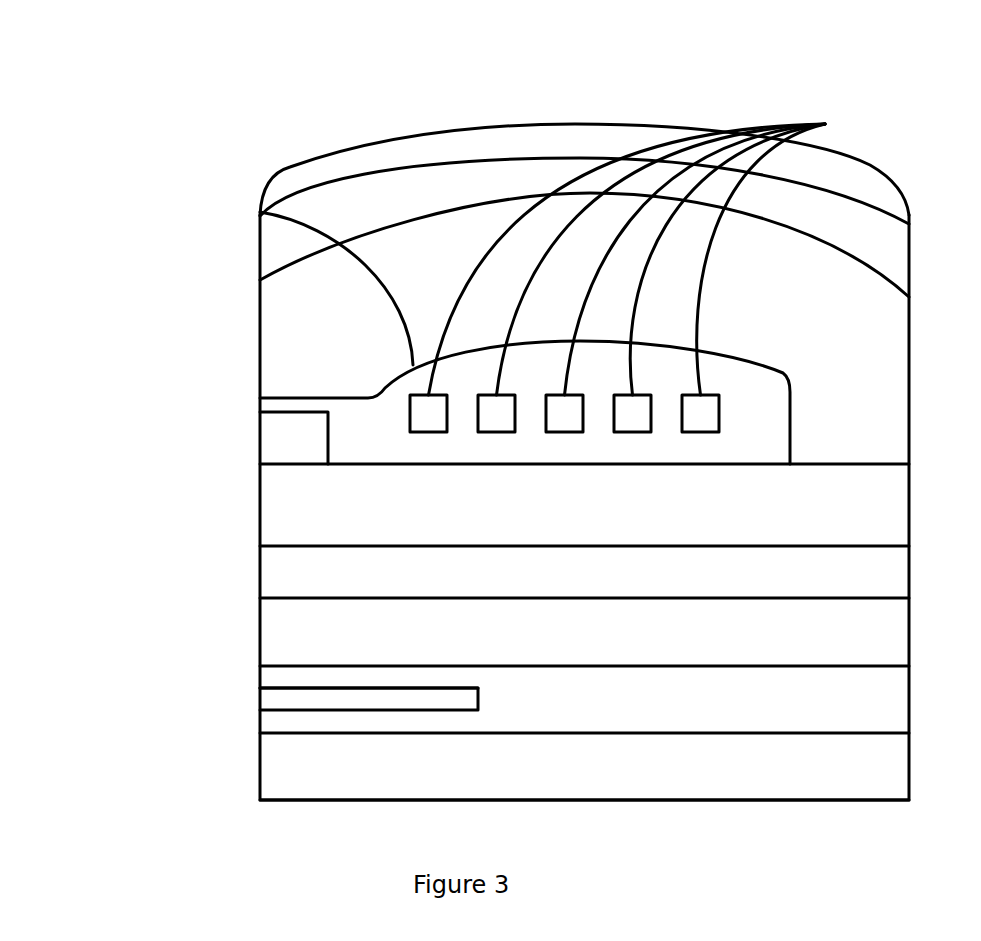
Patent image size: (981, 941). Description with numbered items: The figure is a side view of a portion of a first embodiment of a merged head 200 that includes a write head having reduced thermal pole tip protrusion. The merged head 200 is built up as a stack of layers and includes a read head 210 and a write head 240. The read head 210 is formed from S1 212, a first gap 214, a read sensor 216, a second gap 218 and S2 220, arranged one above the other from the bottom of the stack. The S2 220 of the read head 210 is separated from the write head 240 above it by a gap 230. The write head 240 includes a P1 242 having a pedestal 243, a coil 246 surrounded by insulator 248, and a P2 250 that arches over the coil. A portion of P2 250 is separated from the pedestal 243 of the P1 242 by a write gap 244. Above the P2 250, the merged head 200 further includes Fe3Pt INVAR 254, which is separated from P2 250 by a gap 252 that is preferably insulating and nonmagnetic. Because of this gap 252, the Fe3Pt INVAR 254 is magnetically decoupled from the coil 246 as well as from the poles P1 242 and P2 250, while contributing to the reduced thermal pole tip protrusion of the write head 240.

The merged head 200 is at (488, 71).
The read head 210 is at (120, 598).
The S1 212 is at (343, 802).
The first gap 214 is at (258, 722).
The read sensor 216 is at (258, 700).
The second gap 218 is at (258, 673).
The S2 220 is at (258, 612).
The gap 230 is at (258, 555).
The write head 240 is at (115, 193).
The P1 242 is at (200, 410).
The pedestal 243 is at (258, 438).
The write gap 244 is at (258, 407).
The coil 246 is at (646, 273).
The insulator 248 is at (260, 211).
The P2 250 is at (260, 323).
The gap 252 is at (323, 185).
The Fe3Pt INVAR 254 is at (400, 138).